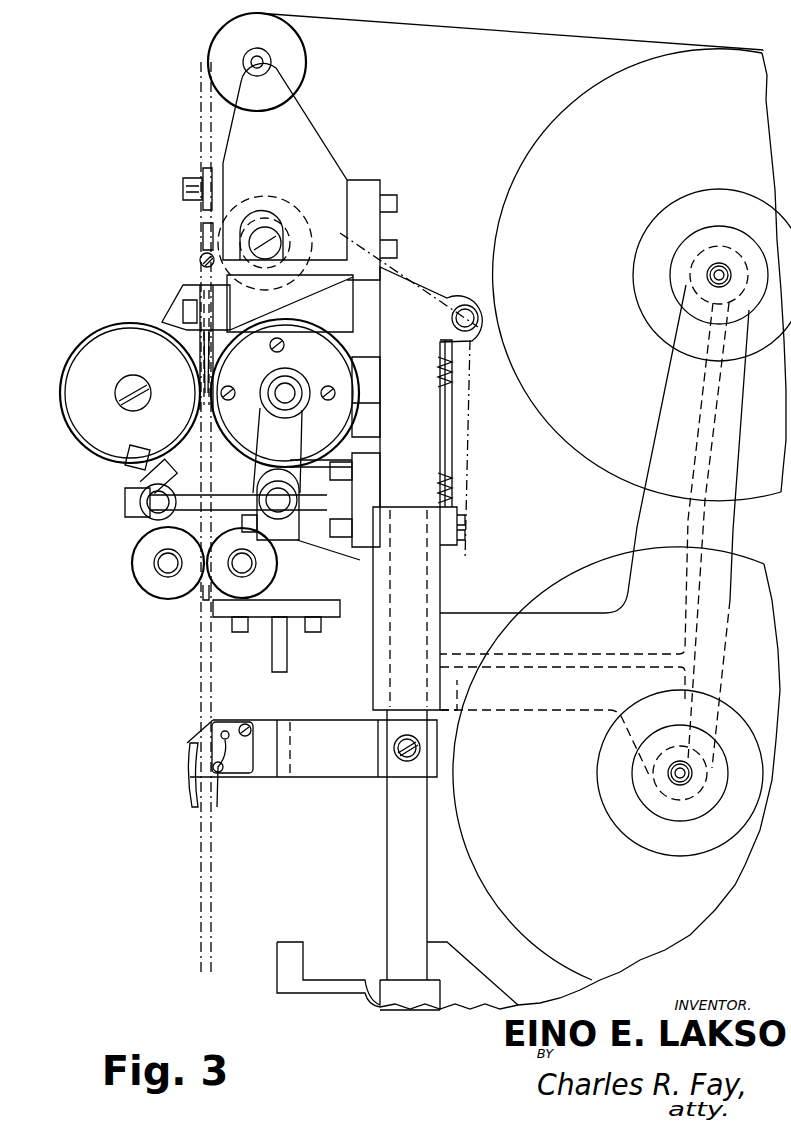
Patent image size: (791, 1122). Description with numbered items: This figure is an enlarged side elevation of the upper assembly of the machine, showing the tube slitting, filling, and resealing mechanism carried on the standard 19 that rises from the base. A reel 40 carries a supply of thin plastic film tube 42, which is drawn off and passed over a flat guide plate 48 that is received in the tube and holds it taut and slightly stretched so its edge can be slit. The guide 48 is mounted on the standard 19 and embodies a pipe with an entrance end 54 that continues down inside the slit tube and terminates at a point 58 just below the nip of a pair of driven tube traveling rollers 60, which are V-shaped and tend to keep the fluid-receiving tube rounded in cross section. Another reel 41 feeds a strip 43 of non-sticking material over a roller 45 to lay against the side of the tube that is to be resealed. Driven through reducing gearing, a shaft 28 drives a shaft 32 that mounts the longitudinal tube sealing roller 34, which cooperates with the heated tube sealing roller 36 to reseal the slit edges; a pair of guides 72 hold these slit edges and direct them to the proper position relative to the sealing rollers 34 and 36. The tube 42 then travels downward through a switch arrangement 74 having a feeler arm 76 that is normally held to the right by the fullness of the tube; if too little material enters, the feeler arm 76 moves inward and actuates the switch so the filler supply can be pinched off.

The standard 19 is at (400, 665).
The shaft 28 is at (287, 388).
The shaft 32 is at (136, 378).
The longitudinal tube sealing roller 34 is at (92, 438).
The heated tube sealing roller 36 is at (305, 340).
The reel 40 is at (659, 300).
The reel 41 is at (632, 818).
The tube 42 is at (497, 32).
The strip of non-sticking material 43 is at (412, 264).
The roller 45 is at (280, 198).
The guide plate 48 is at (203, 125).
The entrance end 54 is at (200, 260).
The terminating point 58 is at (200, 592).
The driven tube traveling rollers 60 is at (148, 575).
The guides 72 is at (197, 295).
The switch arrangement 74 is at (193, 775).
The feeler arm 76 is at (217, 780).